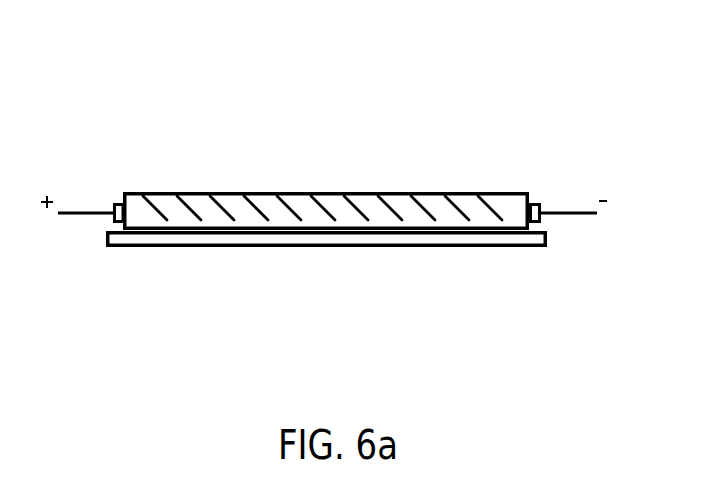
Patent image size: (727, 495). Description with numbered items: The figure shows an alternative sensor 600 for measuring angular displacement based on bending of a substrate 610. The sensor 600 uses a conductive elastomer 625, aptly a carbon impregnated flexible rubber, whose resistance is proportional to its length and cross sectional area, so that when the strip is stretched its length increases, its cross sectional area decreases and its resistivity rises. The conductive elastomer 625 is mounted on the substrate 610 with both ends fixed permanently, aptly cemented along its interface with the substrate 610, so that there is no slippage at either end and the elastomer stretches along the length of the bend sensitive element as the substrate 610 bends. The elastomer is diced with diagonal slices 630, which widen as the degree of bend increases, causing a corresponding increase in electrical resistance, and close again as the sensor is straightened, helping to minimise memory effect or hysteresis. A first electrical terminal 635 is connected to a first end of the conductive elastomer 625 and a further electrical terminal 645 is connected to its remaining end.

The sensor 600 is at (384, 126).
The substrate 610 is at (152, 238).
The conductive elastomer 625 is at (345, 218).
The diagonal slices 630 is at (188, 202).
The first electrical terminal 635 is at (112, 205).
The further electrical terminal 645 is at (536, 203).